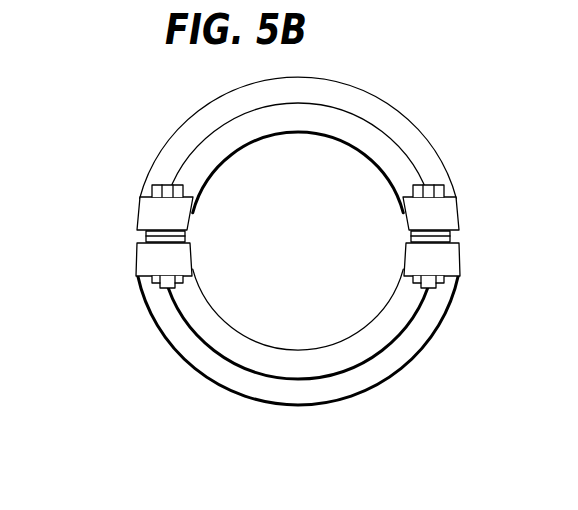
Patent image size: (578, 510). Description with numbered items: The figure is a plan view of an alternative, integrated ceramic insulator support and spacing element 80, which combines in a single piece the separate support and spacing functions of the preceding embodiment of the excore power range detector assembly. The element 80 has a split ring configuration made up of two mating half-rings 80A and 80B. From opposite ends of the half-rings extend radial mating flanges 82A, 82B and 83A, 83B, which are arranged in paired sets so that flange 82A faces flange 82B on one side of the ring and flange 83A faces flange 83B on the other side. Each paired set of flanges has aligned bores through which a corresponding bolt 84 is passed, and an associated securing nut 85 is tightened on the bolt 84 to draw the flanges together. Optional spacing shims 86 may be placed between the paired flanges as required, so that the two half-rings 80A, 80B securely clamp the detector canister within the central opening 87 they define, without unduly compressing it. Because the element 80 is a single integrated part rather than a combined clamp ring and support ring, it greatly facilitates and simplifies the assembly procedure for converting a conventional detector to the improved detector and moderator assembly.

The integrated ceramic insulator support and spacing element 80 is at (317, 218).
The half-ring 80A is at (437, 153).
The half-ring 80B is at (452, 322).
The mating flange 82A is at (146, 258).
The mating flange 82B is at (465, 262).
The mating flange 83A is at (146, 205).
The mating flange 83B is at (463, 211).
The bolt 84 is at (165, 184).
The securing nut 85 is at (147, 284).
The spacing shim 86 is at (140, 232).
The central opening 87 is at (305, 180).